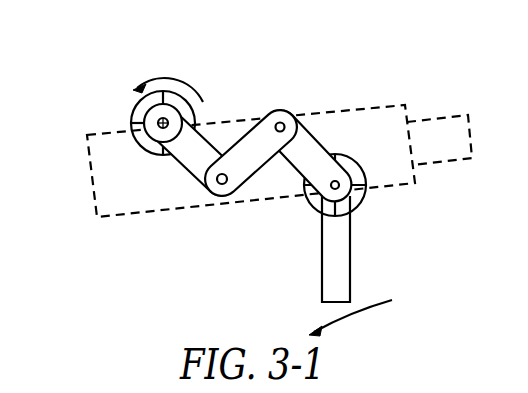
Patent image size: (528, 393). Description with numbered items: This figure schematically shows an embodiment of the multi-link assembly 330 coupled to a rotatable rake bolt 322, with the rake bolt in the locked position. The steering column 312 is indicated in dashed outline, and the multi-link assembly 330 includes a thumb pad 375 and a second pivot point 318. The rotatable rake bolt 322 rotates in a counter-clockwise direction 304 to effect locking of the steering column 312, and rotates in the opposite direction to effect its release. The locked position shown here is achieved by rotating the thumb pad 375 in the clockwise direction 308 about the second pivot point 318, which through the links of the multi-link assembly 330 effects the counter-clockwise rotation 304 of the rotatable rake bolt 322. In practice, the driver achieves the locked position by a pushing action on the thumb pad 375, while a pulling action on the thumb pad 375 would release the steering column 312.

The counter-clockwise direction 304 is at (162, 78).
The clockwise direction 308 is at (352, 317).
The steering column 312 is at (91, 171).
The second pivot point 318 is at (363, 191).
The rotatable rake bolt 322 is at (196, 112).
The multi-link assembly 330 is at (183, 164).
The thumb pad 375 is at (351, 270).